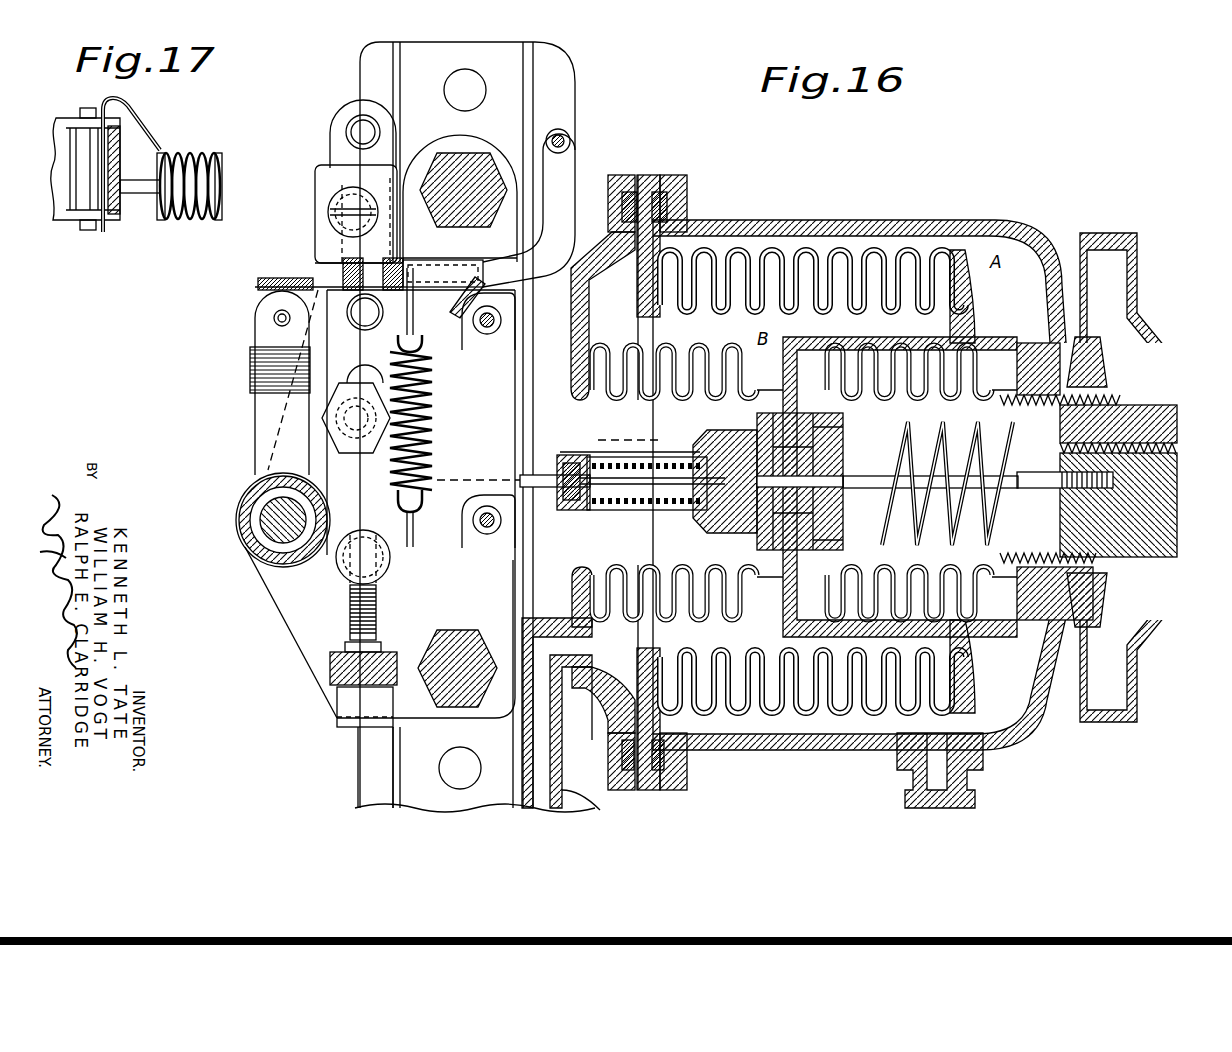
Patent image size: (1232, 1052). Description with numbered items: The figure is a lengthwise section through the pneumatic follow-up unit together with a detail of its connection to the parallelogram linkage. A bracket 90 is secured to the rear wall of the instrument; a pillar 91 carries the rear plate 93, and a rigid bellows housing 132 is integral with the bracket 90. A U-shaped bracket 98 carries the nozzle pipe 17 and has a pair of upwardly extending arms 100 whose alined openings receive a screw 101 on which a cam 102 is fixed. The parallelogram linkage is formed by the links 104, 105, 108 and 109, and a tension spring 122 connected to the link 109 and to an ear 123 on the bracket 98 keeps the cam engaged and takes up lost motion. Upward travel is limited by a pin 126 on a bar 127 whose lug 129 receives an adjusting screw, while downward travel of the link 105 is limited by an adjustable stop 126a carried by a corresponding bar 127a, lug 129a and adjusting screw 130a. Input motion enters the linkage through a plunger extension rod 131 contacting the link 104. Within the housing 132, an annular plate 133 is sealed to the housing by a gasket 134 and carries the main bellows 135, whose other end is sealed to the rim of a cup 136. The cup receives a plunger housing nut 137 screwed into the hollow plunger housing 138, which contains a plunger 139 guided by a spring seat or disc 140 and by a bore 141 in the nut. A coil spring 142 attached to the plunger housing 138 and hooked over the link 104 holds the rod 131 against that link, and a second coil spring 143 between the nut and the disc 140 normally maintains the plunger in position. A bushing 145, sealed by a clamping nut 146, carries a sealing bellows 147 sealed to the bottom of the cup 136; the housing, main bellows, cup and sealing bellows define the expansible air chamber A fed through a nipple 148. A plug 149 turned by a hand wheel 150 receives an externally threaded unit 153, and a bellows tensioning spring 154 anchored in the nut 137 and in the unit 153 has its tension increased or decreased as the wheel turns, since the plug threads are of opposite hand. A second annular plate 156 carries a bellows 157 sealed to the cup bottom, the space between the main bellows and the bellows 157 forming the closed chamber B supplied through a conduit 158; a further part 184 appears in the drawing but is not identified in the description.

In FIG. 16, the nozzle pipe 17 is at (548, 205).
In FIG. 16, the bracket 90 is at (565, 83).
In FIG. 16, the pillar 91 is at (470, 160).
In FIG. 16, the rear plate 93 is at (470, 640).
In FIG. 16, the U-shaped bracket 98 is at (437, 258).
In FIG. 16, the upwardly extending arms 100 is at (318, 172).
In FIG. 16, the screw 101 is at (328, 212).
In FIG. 16, the cam 102 is at (400, 150).
In FIG. 17, the link 104 is at (118, 168).
In FIG. 16, the link 104 is at (515, 430).
In FIG. 16, the link 105 is at (258, 284).
In FIG. 16, the link 108 is at (253, 418).
In FIG. 16, the link 109 is at (410, 555).
In FIG. 16, the tension spring 122 is at (432, 400).
In FIG. 16, the ear 123 is at (440, 298).
In FIG. 16, the pin 126 is at (380, 132).
In FIG. 16, the adjustable stop 126a is at (395, 336).
In FIG. 16, the bar 127 is at (330, 143).
In FIG. 16, the bar 127a is at (398, 480).
In FIG. 16, the lug 129 is at (325, 570).
In FIG. 16, the lug 129a is at (390, 580).
In FIG. 16, the adjusting screw 130a is at (378, 630).
In FIG. 17, the plunger extension rod 131 is at (150, 194).
In FIG. 16, the plunger extension rod 131 is at (538, 490).
In FIG. 16, the bellows housing 132 is at (785, 220).
In FIG. 16, the annular plate 133 is at (665, 175).
In FIG. 16, the gasket 134 is at (688, 210).
In FIG. 16, the main bellows 135 is at (770, 340).
In FIG. 16, the cup 136 is at (1000, 330).
In FIG. 16, the plunger housing nut 137 is at (890, 403).
In FIG. 17, the plunger housing 138 is at (222, 174).
In FIG. 16, the plunger housing 138 is at (700, 455).
In FIG. 16, the plunger 139 is at (700, 520).
In FIG. 16, the spring seat or disc 140 is at (575, 512).
In FIG. 16, the bore 141 is at (760, 530).
In FIG. 17, the coil spring 142 is at (168, 158).
In FIG. 16, the coil spring 142 is at (598, 452).
In FIG. 16, the second coil spring 143 is at (640, 512).
In FIG. 16, the bushing 145 is at (1005, 420).
In FIG. 16, the clamping nut 146 is at (1085, 337).
In FIG. 16, the sealing bellows 147 is at (945, 440).
In FIG. 16, the nipple 148 is at (978, 782).
In FIG. 16, the plug 149 is at (1178, 530).
In FIG. 16, the hand wheel 150 is at (1137, 683).
In FIG. 16, the externally threaded unit 153 is at (1060, 490).
In FIG. 16, the bellows tensioning spring 154 is at (855, 490).
In FIG. 16, the second annular plate 156 is at (585, 330).
In FIG. 16, the bellows 157 is at (735, 347).
In FIG. 16, the conduit 158 is at (548, 620).
In FIG. 16, the bar 184 is at (320, 268).